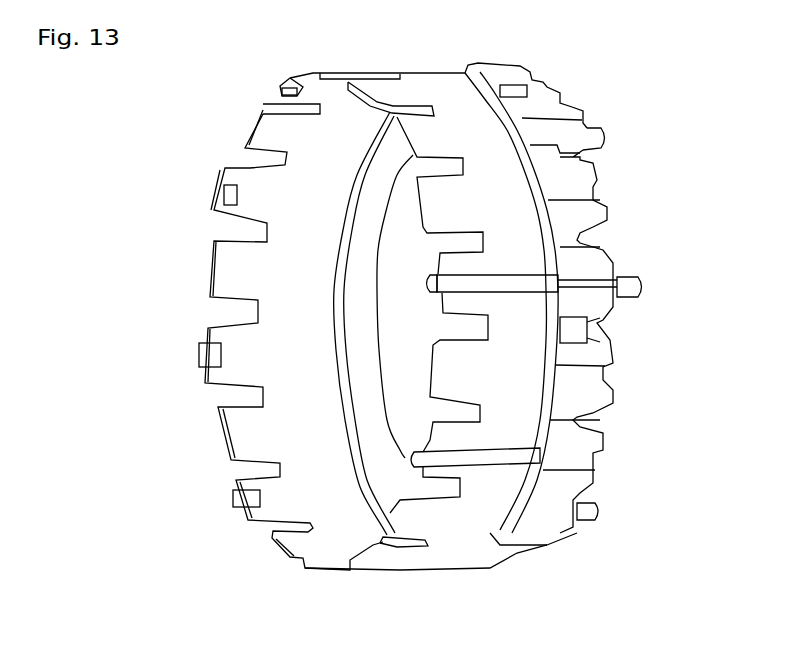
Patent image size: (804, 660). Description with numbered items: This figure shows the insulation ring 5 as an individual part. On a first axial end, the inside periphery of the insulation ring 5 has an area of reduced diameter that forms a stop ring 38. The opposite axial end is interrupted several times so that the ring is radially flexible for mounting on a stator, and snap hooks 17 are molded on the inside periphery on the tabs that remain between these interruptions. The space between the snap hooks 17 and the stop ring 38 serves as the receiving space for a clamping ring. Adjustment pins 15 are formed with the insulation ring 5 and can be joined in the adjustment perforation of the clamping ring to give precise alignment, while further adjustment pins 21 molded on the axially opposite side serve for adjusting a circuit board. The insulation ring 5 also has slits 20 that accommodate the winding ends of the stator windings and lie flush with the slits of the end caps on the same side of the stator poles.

The insulation ring 5 is at (158, 385).
The adjustment pins 15 is at (423, 284).
The snap hooks 17 is at (272, 93).
The slits 20 is at (550, 92).
The adjustment pins 21 is at (605, 137).
The stop ring 38 is at (343, 413).